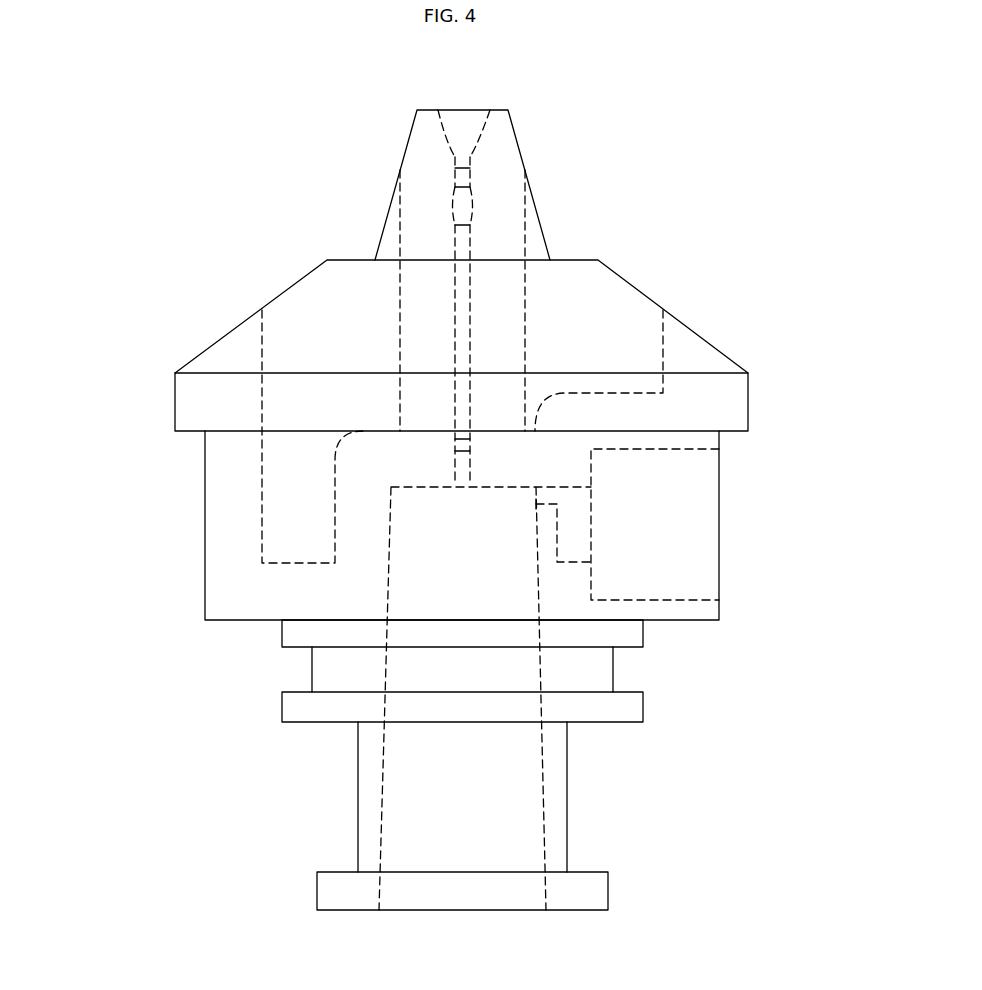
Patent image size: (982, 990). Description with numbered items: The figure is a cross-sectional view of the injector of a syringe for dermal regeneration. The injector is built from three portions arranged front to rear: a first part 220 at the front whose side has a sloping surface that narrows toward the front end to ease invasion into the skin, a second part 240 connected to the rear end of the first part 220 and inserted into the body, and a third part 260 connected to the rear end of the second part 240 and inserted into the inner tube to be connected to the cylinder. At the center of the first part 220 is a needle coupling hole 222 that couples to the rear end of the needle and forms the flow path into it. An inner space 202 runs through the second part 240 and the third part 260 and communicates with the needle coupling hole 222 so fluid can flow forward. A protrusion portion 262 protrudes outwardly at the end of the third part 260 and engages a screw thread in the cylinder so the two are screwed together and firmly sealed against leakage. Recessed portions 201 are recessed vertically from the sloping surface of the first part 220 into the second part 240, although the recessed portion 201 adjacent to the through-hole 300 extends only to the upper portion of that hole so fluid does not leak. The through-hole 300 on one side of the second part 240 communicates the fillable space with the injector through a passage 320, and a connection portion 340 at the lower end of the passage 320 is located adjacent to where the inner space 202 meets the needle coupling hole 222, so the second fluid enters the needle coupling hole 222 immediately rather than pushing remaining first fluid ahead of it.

The recessed portion 201 is at (346, 301).
The inner space 202 is at (478, 815).
The first part 220 is at (190, 405).
The needle coupling hole 222 is at (463, 130).
The second part 240 is at (213, 557).
The third part 260 is at (363, 797).
The protrusion portion 262 is at (323, 896).
The through-hole 300 is at (672, 510).
The passage 320 is at (579, 553).
The connection portion 340 is at (548, 495).